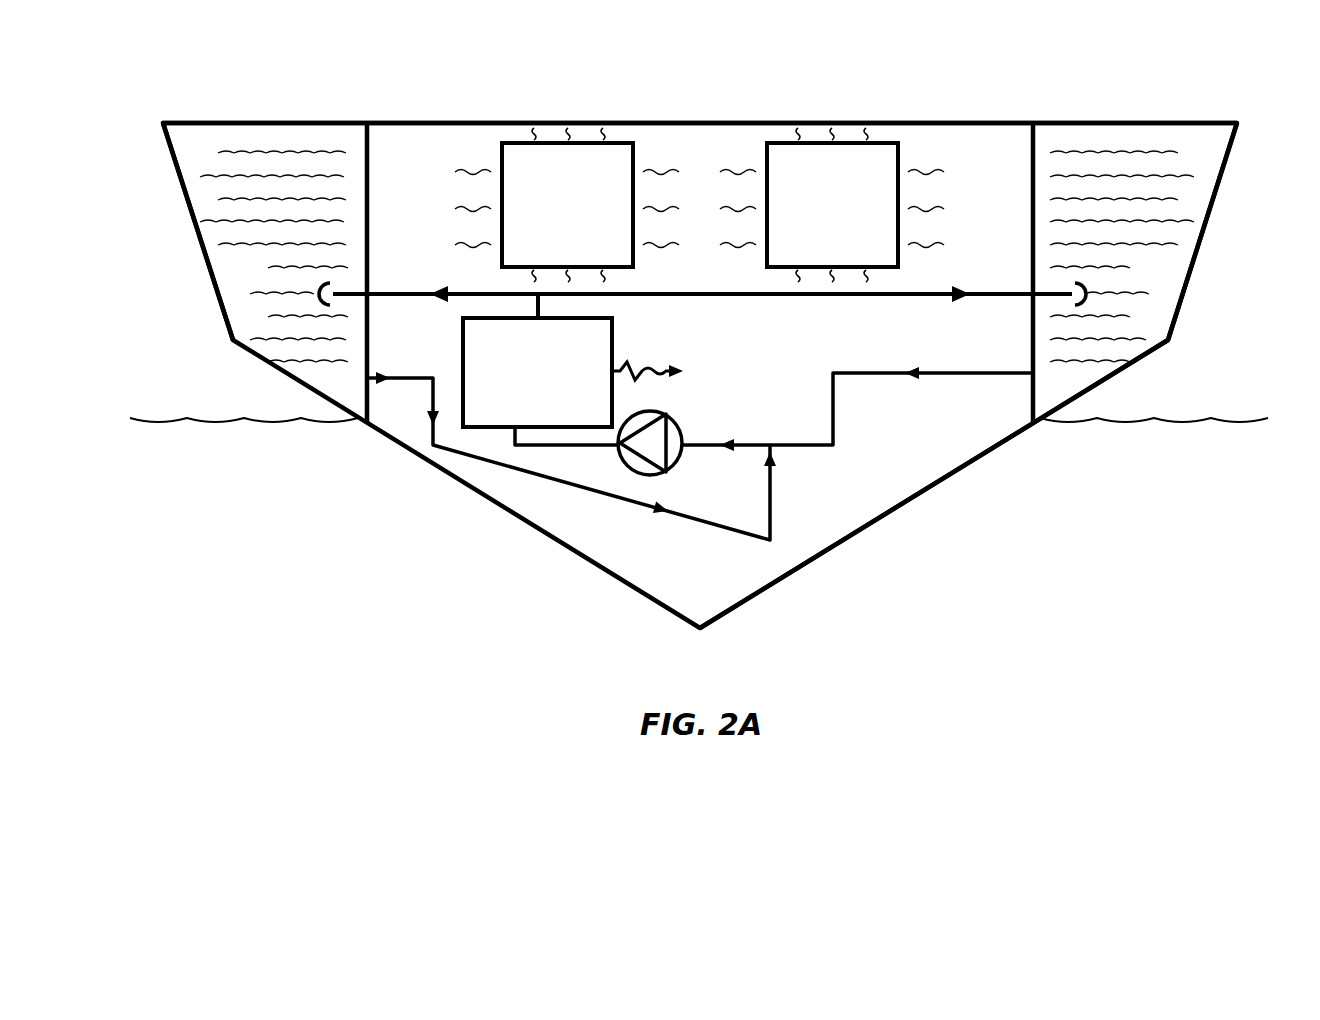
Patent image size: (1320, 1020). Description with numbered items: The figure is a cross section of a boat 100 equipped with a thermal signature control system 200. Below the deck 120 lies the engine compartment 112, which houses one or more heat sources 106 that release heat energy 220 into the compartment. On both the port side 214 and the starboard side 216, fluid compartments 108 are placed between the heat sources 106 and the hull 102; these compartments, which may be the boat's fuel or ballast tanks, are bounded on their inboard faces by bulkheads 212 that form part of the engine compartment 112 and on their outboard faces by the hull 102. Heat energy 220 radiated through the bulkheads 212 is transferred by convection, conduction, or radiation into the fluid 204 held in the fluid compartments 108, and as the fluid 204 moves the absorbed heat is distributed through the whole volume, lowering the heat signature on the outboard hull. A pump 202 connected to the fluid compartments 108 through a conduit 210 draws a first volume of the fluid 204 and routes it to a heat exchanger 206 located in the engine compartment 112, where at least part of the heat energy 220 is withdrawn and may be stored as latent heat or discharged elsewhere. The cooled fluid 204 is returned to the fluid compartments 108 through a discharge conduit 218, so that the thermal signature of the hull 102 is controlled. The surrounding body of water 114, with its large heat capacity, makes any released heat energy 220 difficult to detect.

The boat 100 is at (570, 90).
The thermal signature control system 200 is at (868, 60).
The hull 102 is at (965, 465).
The heat source 106 is at (699, 205).
The fluid compartment 108 is at (198, 150).
The engine compartment 112 is at (997, 235).
The body of water 114 is at (699, 481).
The deck 120 is at (700, 123).
The pump 202 is at (622, 470).
The fluid 204 is at (248, 280).
The heat exchanger 206 is at (537, 360).
The conduit 210 is at (833, 410).
The bulkhead 212 is at (367, 178).
The port side 214 is at (192, 207).
The starboard side 216 is at (1208, 207).
The discharge conduit 218 is at (770, 296).
The heat energy 220 is at (463, 170).